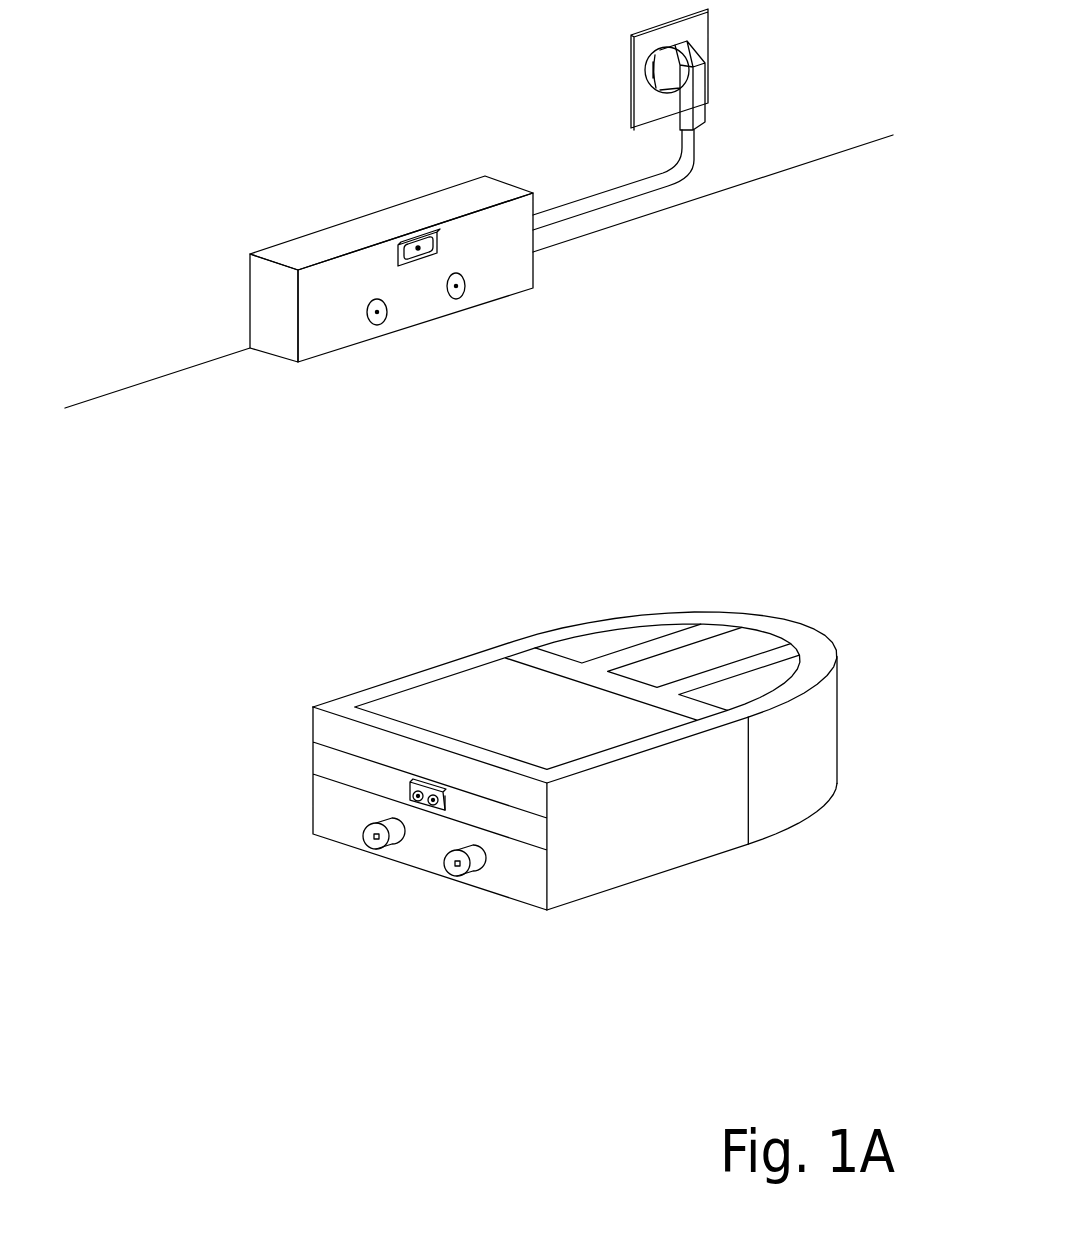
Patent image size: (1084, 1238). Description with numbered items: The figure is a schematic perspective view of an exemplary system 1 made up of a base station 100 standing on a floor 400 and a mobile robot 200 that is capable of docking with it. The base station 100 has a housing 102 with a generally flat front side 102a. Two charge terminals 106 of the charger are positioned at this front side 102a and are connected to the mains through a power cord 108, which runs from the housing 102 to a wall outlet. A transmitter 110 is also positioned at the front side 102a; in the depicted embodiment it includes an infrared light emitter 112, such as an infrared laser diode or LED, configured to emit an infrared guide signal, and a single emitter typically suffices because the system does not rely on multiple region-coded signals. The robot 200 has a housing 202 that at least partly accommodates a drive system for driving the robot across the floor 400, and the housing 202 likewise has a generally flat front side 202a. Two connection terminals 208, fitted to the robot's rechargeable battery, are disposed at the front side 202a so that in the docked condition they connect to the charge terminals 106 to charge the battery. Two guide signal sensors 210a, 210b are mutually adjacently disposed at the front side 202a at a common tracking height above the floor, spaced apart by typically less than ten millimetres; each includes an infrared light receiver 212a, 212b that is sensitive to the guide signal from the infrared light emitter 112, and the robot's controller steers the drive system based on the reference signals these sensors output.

The system 1 is at (862, 76).
The base station 100 is at (280, 218).
The housing 102 is at (277, 323).
The front side 102a is at (337, 325).
The charge terminals 106 is at (377, 312).
The power cord 108 is at (580, 208).
The transmitter 110 is at (419, 268).
The infrared light emitter 112 is at (418, 248).
The floor 400 is at (700, 357).
The mobile robot 200 is at (285, 690).
The housing 202 is at (642, 838).
The front side 202a is at (505, 881).
The connection terminals 208 is at (445, 875).
The guide signal sensor 210a is at (415, 778).
The guide signal sensor 210b is at (435, 781).
The infrared light receiver 212a is at (410, 793).
The infrared light receiver 212b is at (445, 810).